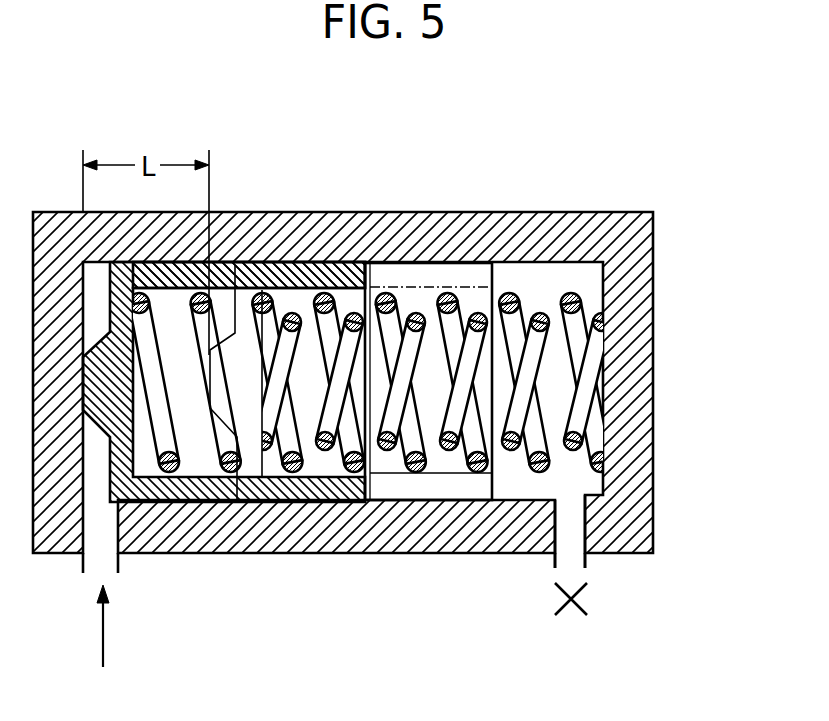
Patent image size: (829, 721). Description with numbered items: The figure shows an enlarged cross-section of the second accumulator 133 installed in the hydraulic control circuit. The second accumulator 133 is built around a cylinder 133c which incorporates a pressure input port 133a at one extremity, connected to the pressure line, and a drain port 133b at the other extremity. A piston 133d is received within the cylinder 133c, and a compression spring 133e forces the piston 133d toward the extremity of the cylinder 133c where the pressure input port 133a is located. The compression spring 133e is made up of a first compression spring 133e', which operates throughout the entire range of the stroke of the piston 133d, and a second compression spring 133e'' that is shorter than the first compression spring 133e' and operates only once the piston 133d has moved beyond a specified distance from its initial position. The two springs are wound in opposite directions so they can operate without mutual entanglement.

The second accumulator 133 is at (608, 198).
The pressure input port 133a is at (105, 552).
The drain port 133b is at (575, 548).
The cylinder 133c is at (432, 262).
The piston 133d is at (311, 268).
The compression spring 133e is at (370, 475).
The first compression spring 133e' is at (370, 448).
The second compression spring 133e'' is at (432, 458).